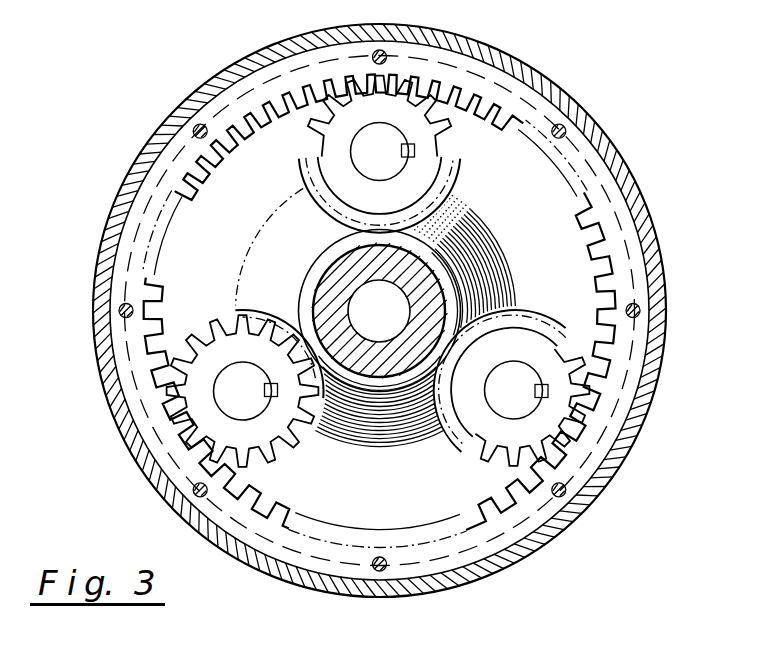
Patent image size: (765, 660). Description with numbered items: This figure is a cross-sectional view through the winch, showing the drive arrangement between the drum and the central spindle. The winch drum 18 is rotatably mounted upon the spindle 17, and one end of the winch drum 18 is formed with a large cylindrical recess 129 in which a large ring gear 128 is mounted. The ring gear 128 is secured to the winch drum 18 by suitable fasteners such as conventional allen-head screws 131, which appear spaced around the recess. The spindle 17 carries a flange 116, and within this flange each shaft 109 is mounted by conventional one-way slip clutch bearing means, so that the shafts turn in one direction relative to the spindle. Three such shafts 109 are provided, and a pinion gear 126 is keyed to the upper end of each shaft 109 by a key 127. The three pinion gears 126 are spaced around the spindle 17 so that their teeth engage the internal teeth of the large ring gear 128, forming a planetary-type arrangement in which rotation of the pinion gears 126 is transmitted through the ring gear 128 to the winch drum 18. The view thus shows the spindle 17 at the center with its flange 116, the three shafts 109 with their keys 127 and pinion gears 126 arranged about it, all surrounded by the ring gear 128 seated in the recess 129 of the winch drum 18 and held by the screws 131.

The winch drum 18 is at (553, 74).
The allen-head screws 131 is at (193, 126).
The cylindrical recess 129 is at (628, 168).
The ring gear 128 is at (600, 250).
The spindle 17 is at (435, 282).
The flange 116 is at (524, 197).
The pinion gear 126 is at (323, 137).
The shaft 109 is at (390, 153).
The key 127 is at (415, 151).